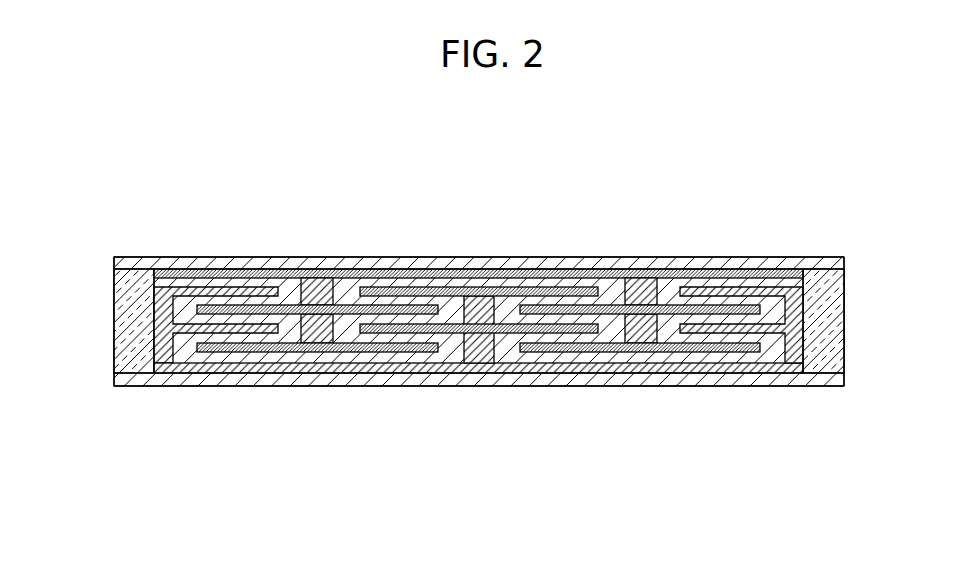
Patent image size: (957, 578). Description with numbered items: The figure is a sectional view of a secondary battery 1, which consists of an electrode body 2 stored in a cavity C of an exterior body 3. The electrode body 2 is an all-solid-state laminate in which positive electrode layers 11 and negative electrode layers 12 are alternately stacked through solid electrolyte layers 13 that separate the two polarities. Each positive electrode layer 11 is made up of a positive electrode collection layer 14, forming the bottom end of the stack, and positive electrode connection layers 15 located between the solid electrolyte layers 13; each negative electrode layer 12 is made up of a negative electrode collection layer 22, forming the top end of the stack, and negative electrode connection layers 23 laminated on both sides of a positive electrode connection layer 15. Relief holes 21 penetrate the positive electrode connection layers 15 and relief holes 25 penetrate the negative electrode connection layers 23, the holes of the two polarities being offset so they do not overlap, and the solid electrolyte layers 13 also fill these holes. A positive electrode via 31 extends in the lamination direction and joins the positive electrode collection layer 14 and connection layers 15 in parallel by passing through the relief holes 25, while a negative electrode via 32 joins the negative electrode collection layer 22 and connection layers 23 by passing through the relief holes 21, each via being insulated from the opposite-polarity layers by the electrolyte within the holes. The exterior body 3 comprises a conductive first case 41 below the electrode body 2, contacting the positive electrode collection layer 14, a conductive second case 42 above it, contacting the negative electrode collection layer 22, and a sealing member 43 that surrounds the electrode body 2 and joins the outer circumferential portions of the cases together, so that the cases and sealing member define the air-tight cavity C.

The secondary battery 1 is at (808, 215).
The electrode body 2 is at (808, 378).
The exterior body 3 is at (110, 403).
The positive electrode layer 11 is at (682, 380).
The negative electrode layer 12 is at (735, 260).
The solid electrolyte layer 13 is at (290, 362).
The positive electrode collection layer 14 is at (437, 366).
The positive electrode connection layer 15 is at (577, 298).
The relief hole 21 is at (357, 328).
The negative electrode collection layer 22 is at (378, 270).
The negative electrode connection layer 23 is at (300, 342).
The relief hole 25 is at (462, 296).
The positive electrode via 31 is at (452, 362).
The negative electrode via 32 is at (672, 296).
The first case 41 is at (220, 383).
The second case 42 is at (215, 258).
The sealing member 43 is at (113, 302).
The cavity C is at (606, 283).